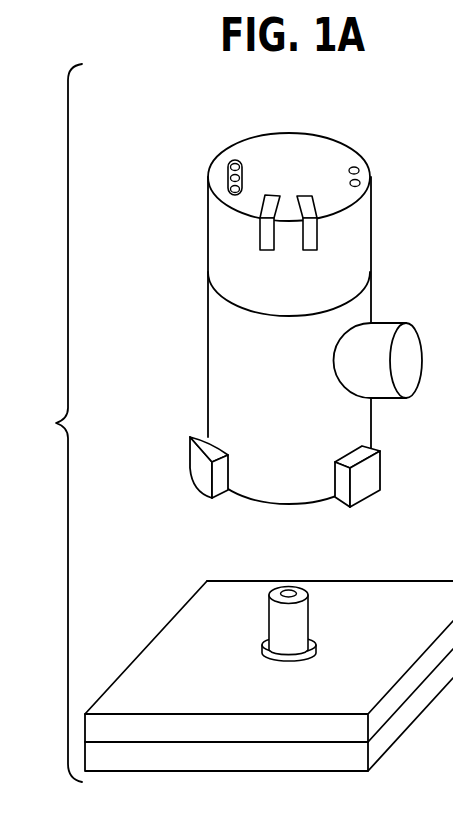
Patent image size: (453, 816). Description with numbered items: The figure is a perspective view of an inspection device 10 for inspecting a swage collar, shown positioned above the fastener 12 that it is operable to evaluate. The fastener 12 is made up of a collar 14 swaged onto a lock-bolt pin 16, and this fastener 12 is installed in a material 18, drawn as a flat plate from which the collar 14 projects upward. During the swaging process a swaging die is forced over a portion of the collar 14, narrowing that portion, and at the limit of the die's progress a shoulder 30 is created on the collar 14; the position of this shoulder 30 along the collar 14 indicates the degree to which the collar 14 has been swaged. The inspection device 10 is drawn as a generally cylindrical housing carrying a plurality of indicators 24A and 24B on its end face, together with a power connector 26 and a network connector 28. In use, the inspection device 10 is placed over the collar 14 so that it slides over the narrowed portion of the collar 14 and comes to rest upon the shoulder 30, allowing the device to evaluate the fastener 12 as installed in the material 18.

The inspection device 10 is at (282, 117).
The fastener 12 is at (285, 637).
The collar 14 is at (263, 624).
The lock-bolt pin 16 is at (294, 578).
The material 18 is at (438, 616).
The indicator 24A is at (268, 252).
The indicator 24B is at (310, 252).
The power connector 26 is at (372, 172).
The network connector 28 is at (224, 178).
The shoulder 30 is at (259, 648).